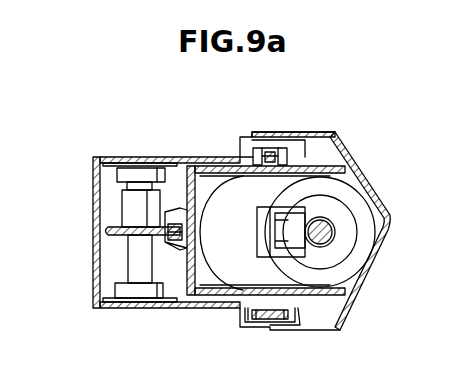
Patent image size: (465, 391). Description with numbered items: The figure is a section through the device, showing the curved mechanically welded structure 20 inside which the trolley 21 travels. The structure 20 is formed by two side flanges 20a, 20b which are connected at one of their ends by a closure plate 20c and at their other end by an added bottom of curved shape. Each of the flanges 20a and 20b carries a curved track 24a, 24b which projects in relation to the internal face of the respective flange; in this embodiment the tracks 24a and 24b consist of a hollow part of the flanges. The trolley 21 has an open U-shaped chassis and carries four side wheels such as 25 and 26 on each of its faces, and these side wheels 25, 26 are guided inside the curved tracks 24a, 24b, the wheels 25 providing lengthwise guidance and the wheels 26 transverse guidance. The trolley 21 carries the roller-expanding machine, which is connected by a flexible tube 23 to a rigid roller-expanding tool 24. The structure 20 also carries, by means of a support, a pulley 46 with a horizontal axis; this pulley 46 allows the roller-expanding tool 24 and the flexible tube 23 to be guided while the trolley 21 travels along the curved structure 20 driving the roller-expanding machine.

The mechanically welded structure 20 is at (126, 157).
The side flange 20a is at (215, 157).
The side flange 20b is at (206, 308).
The closure plate 20c is at (96, 250).
The trolley 21 is at (186, 168).
The flexible tube 23 is at (361, 160).
The roller-expanding tool 24 is at (333, 230).
The curved track 24a is at (302, 145).
The curved track 24b is at (302, 312).
The side wheel 25 is at (261, 322).
The side wheel 26 is at (268, 151).
The pulley 46 is at (275, 235).